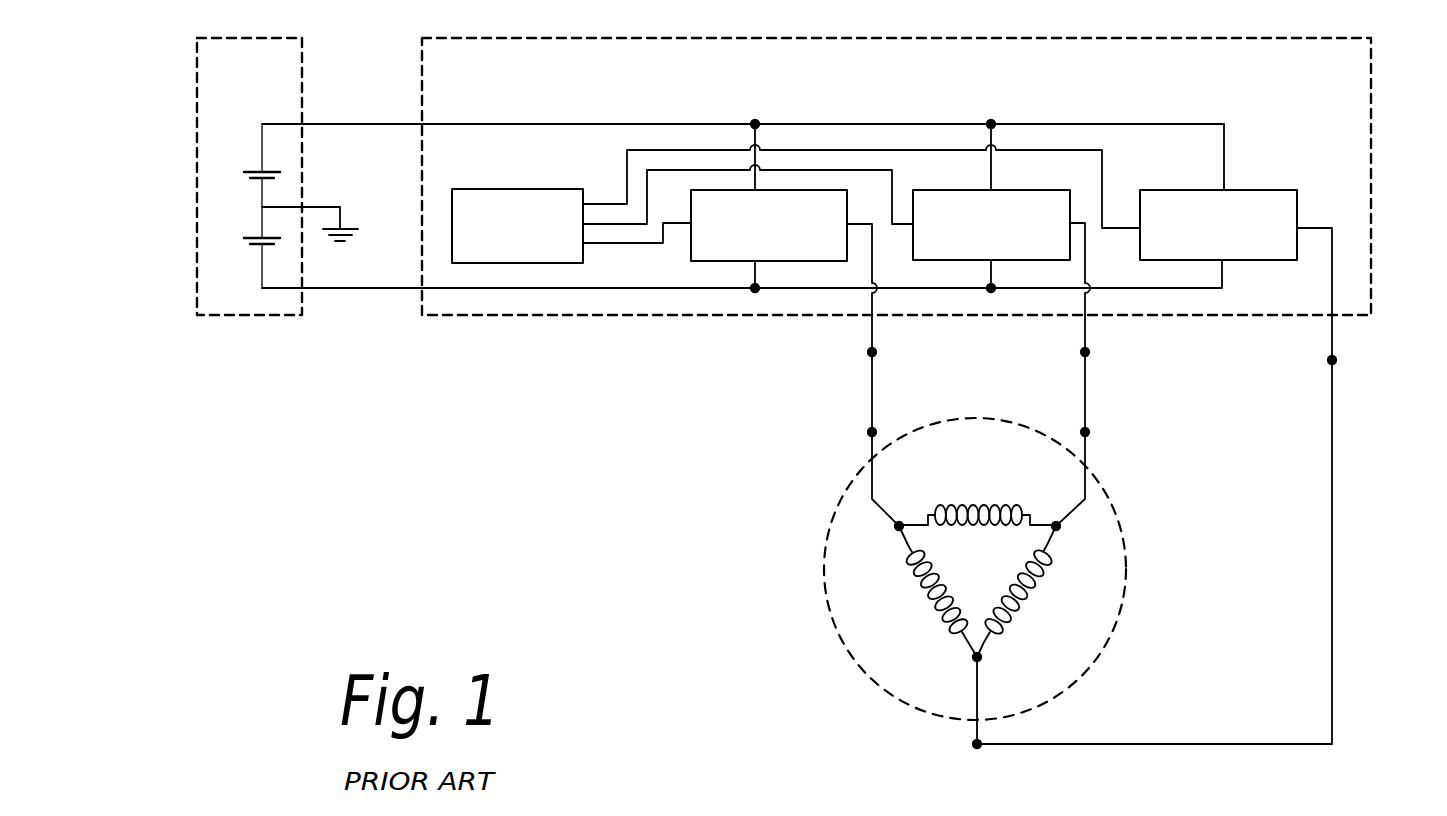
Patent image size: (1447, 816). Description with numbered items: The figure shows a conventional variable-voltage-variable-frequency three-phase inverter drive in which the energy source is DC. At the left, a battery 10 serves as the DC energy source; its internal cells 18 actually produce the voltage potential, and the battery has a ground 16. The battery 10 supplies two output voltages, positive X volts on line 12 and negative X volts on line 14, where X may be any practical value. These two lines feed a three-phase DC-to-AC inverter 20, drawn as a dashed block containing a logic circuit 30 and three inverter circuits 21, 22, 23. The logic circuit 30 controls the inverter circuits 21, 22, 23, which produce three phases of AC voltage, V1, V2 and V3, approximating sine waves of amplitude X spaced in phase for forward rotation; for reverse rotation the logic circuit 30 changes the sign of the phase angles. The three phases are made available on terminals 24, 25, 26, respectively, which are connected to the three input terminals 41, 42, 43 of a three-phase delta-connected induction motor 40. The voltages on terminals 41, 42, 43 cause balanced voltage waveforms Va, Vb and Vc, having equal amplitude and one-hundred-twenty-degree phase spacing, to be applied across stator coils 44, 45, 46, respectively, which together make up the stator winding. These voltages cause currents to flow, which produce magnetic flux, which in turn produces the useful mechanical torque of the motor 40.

The battery 10 is at (229, 294).
The line 12 is at (361, 126).
The line 14 is at (369, 294).
The ground 16 is at (320, 210).
The internal cells 18 is at (231, 230).
The three-phase DC-to-AC inverter 20 is at (1325, 153).
The inverter circuit 21 is at (736, 255).
The inverter circuit 22 is at (1048, 257).
The inverter circuit 23 is at (1211, 261).
The terminal 24 is at (874, 332).
The terminal 25 is at (1087, 330).
The terminal 26 is at (1334, 332).
The logic circuit 30 is at (491, 194).
The three-phase delta-connected induction motor 40 is at (852, 653).
The motor input terminal 41 is at (881, 457).
The motor input terminal 42 is at (1077, 457).
The motor input terminal 43 is at (975, 727).
The stator coil 44 is at (1046, 525).
The stator coil 45 is at (977, 657).
The stator coil 46 is at (903, 544).